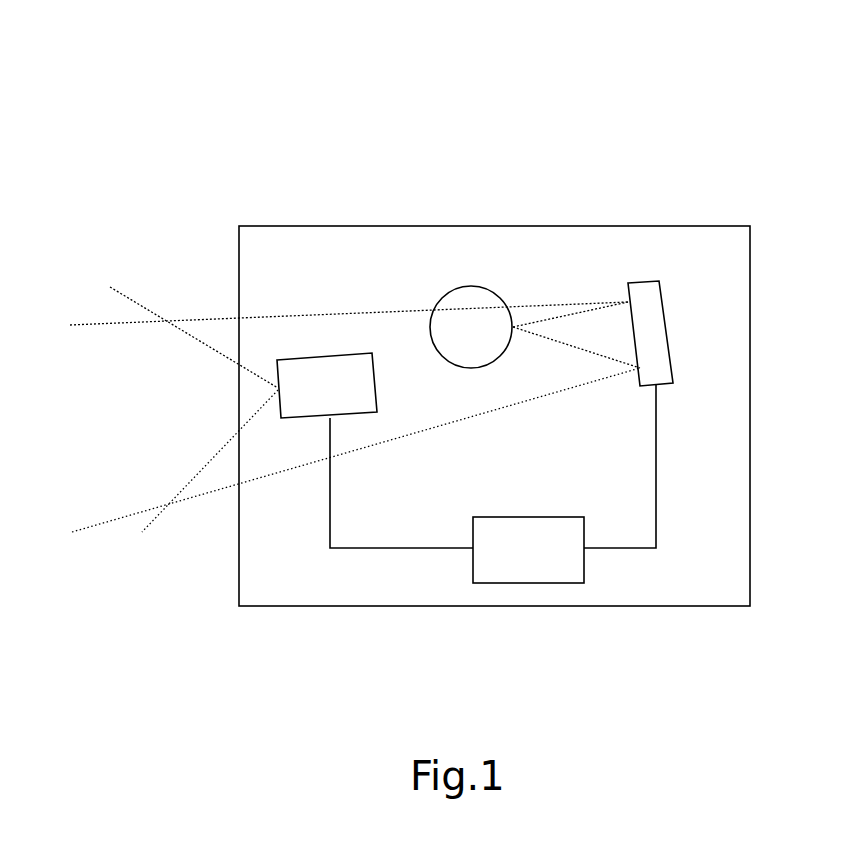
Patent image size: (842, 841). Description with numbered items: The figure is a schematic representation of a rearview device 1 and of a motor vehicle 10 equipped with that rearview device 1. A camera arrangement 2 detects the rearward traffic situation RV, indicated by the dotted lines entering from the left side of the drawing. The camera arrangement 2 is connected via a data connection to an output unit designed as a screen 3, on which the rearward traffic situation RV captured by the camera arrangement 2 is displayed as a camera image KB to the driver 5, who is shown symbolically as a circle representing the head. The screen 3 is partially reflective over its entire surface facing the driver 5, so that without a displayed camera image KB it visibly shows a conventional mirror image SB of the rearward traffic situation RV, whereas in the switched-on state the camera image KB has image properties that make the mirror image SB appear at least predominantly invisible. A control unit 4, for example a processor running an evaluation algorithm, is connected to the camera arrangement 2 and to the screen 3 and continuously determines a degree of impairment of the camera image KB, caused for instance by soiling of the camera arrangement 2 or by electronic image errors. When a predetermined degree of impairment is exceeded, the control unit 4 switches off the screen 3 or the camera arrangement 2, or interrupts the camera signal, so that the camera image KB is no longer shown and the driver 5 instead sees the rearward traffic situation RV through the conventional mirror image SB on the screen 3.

The rearview device 1 is at (410, 306).
The motor vehicle 10 is at (331, 158).
The camera arrangement 2 is at (327, 385).
The screen 3 is at (643, 281).
The control unit 4 is at (493, 484).
The driver 5 is at (470, 286).
The mirror image SB is at (278, 315).
The camera image KB is at (128, 299).
The rearward traffic situation RV is at (115, 412).